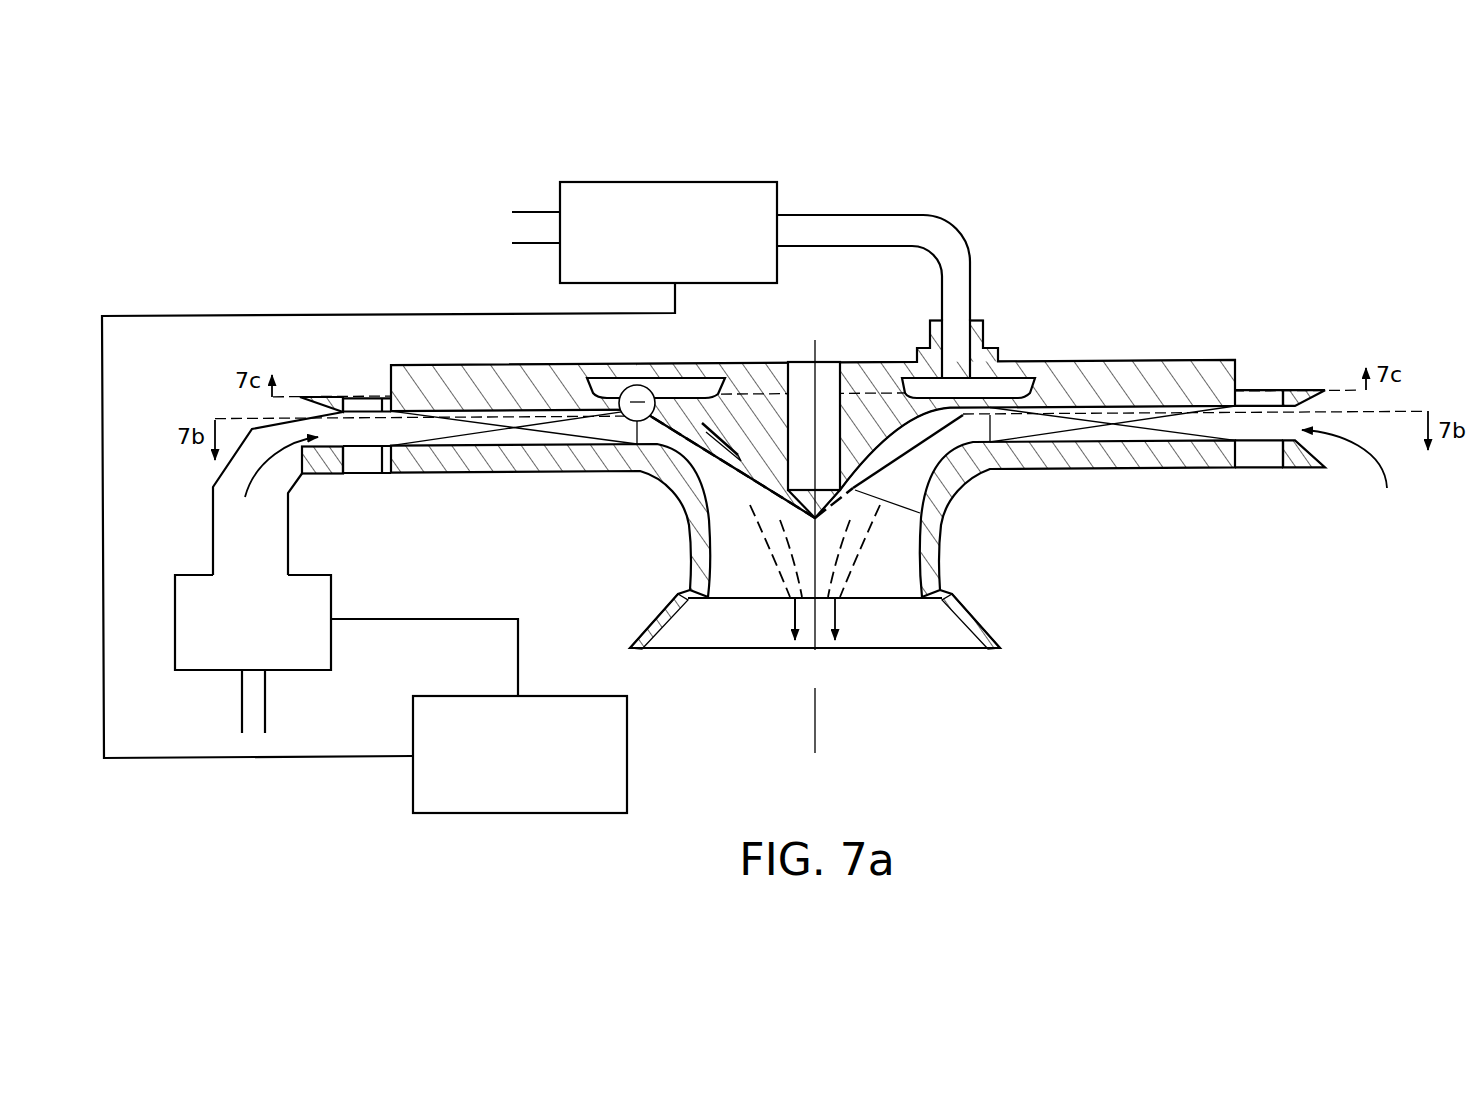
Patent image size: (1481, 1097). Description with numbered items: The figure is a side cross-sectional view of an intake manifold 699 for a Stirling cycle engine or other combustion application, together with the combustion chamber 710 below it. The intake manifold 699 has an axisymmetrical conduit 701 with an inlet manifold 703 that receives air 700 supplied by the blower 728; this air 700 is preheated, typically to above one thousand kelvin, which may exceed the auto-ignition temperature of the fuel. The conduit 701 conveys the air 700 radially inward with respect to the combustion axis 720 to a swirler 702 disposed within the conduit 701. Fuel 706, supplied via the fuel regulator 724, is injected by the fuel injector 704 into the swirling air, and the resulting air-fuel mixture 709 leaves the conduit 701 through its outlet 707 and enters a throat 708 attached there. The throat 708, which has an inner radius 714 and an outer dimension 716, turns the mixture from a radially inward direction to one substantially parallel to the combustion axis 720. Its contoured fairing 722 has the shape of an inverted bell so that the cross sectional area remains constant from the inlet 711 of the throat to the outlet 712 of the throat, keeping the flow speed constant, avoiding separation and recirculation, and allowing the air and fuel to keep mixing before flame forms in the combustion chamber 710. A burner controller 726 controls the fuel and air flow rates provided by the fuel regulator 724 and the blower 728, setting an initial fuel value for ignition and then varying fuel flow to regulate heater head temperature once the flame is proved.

The intake manifold 699 is at (1173, 265).
The air 700 is at (811, 493).
The axisymmetrical conduit 701 is at (376, 436).
The swirler 702 is at (460, 436).
The inlet manifold 703 is at (328, 430).
The fuel injector 704 is at (620, 378).
The fuel 706 is at (957, 320).
The outlet of the conduit 707 is at (627, 444).
The throat 708 is at (730, 494).
The air-fuel mixture 709 is at (697, 691).
The combustion chamber 710 is at (893, 580).
The inlet of the throat 711 is at (995, 425).
The outlet of the throat 712 is at (893, 505).
The inner radius 714 is at (887, 433).
The outer dimension 716 is at (945, 460).
The combustion axis 720 is at (813, 724).
The contoured fairing 722 is at (740, 461).
The fuel regulator 724 is at (620, 220).
The burner controller 726 is at (545, 801).
The blower 728 is at (232, 653).